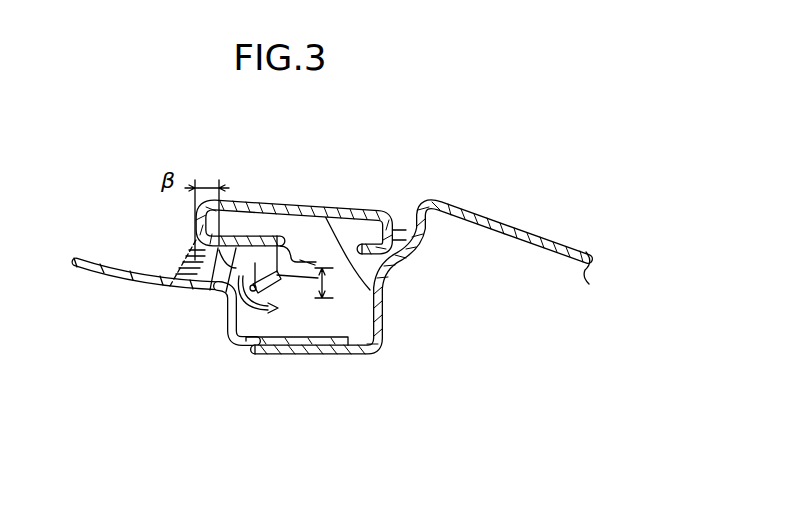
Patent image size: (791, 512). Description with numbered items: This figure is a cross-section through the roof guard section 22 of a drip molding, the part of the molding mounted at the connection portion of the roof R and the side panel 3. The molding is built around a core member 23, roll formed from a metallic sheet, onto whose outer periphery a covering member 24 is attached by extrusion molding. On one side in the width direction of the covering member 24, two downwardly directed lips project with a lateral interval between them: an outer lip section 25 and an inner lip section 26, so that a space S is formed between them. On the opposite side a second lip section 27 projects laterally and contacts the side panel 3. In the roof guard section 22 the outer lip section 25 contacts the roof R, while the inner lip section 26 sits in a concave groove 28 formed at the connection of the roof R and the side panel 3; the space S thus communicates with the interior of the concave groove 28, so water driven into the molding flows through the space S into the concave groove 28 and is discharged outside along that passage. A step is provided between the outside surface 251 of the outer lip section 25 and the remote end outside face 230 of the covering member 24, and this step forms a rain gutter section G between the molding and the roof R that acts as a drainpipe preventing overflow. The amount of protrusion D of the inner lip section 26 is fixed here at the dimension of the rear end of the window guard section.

The side panel 3 is at (422, 247).
The roof guard section 22 is at (324, 194).
The core member 23 is at (385, 296).
The covering member 24 is at (287, 204).
The outer lip section 25 is at (230, 292).
The inner lip section 26 is at (265, 280).
The second lip section 27 is at (403, 229).
The concave groove 28 is at (327, 313).
The remote end outside face 230 is at (195, 222).
The outside surface of the outer lip section 251 is at (195, 283).
The rain gutter section G is at (170, 289).
The roof R is at (128, 268).
The space S is at (237, 322).
The amount of protrusion D is at (328, 284).